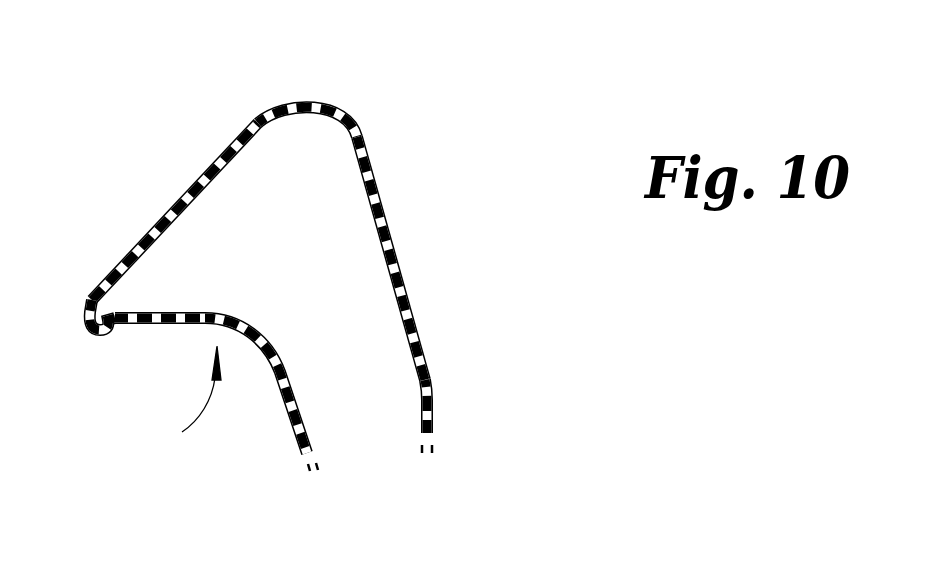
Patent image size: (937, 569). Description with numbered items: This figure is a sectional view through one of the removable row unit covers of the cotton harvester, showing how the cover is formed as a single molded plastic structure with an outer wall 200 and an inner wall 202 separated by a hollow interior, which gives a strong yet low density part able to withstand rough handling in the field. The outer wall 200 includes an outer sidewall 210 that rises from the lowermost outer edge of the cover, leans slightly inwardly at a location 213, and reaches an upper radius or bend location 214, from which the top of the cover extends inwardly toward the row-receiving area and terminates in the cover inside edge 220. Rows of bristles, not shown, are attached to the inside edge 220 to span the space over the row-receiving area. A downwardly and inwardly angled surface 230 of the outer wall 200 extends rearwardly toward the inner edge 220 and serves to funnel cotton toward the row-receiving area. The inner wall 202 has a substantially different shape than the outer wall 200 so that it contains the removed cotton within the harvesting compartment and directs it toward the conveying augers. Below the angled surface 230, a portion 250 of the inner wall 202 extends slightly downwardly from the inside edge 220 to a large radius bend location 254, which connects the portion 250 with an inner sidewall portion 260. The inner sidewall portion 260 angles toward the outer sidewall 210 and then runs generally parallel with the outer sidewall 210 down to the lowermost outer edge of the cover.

The outer wall 200 is at (418, 210).
The upper radius or bend location 214 is at (339, 103).
The downwardly and inwardly angled surface 230 is at (217, 160).
The cover inside edge 220 is at (80, 321).
The portion of inner wall 250 is at (167, 326).
The large radius bend location 254 is at (265, 350).
The inner sidewall portion 260 is at (293, 449).
The location 213 is at (433, 383).
The outer sidewall 210 is at (433, 412).
The inner wall 202 is at (165, 400).